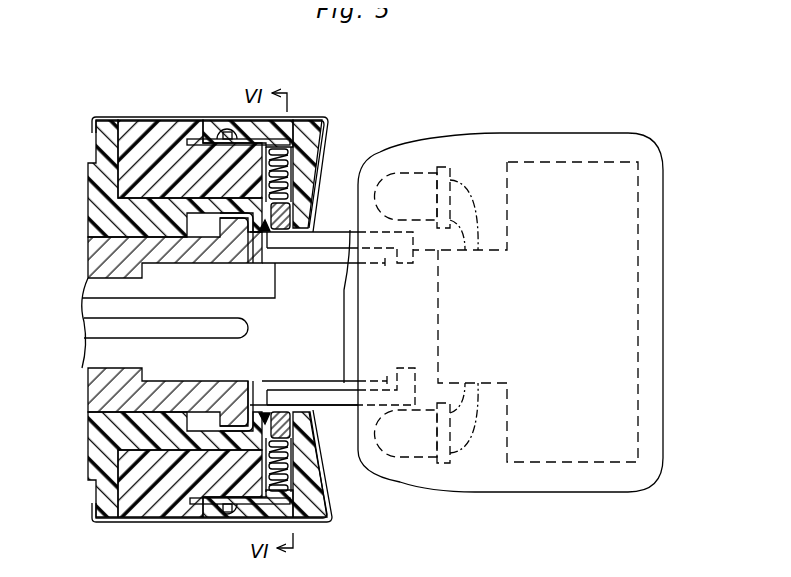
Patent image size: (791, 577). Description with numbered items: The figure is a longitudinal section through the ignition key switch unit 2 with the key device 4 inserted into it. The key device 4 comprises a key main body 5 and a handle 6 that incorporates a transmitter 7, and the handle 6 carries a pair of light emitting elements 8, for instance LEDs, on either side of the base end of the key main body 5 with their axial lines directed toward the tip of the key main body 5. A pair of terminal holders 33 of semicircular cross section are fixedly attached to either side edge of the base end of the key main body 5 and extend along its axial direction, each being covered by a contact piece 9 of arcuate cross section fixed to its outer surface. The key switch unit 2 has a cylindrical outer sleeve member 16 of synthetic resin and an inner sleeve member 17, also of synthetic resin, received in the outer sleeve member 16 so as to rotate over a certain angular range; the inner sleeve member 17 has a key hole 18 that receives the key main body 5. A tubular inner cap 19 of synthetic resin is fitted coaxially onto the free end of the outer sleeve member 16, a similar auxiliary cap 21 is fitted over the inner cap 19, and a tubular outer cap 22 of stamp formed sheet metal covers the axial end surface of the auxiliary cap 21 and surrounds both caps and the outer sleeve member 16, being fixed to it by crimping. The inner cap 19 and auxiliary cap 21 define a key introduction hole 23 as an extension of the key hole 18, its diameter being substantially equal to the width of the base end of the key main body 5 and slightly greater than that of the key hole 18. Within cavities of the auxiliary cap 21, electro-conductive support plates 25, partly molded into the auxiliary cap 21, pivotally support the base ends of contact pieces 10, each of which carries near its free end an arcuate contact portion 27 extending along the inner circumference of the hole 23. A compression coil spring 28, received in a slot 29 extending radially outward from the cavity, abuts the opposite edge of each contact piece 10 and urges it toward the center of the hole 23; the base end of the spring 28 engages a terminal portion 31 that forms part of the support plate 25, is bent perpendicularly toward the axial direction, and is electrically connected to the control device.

The key switch unit 2 is at (342, 508).
The key device 4 is at (594, 132).
The key main body 5 is at (87, 269).
The handle 6 is at (552, 133).
The transmitter 7 is at (640, 257).
The light emitting elements 8 is at (418, 173).
The contact pieces 9 is at (350, 230).
The contact pieces 10 is at (230, 264).
The outer sleeve member 16 is at (88, 183).
The inner sleeve member 17 is at (86, 396).
The key hole 18 is at (182, 264).
The inner cap 19 is at (173, 128).
The auxiliary cap 21 is at (290, 165).
The outer cap 22 is at (148, 117).
The key introduction hole 23 is at (300, 232).
The support plates 25 is at (294, 145).
The arcuate contact portion 27 is at (280, 233).
The compression coil spring 28 is at (291, 193).
The slot 29 is at (314, 150).
The terminal portion 31 is at (247, 135).
The terminal holders 33 is at (343, 345).